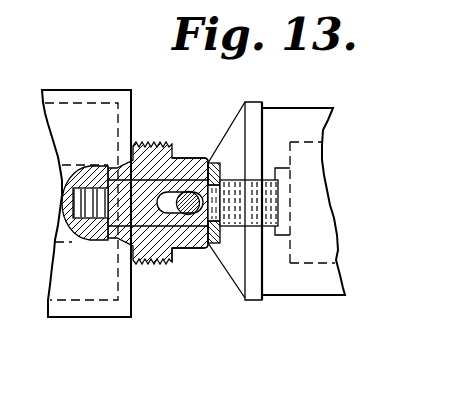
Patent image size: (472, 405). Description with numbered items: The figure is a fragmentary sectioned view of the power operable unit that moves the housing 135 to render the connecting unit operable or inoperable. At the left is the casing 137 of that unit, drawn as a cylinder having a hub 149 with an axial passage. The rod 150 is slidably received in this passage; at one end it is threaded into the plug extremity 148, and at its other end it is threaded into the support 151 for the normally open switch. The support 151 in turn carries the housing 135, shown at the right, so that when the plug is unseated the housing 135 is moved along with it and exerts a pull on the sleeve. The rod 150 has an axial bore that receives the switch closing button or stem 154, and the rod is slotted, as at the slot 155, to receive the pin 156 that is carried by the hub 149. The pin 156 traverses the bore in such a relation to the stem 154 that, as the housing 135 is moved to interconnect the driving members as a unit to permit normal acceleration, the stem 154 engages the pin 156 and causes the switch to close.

The housing 135 is at (298, 295).
The casing 137 is at (117, 317).
The plug extremity 148 is at (97, 243).
The hub 149 is at (162, 263).
The rod 150 is at (184, 163).
The support 151 is at (253, 112).
The switch closing stem 154 is at (213, 244).
The slot 155 is at (172, 250).
The pin 156 is at (209, 184).